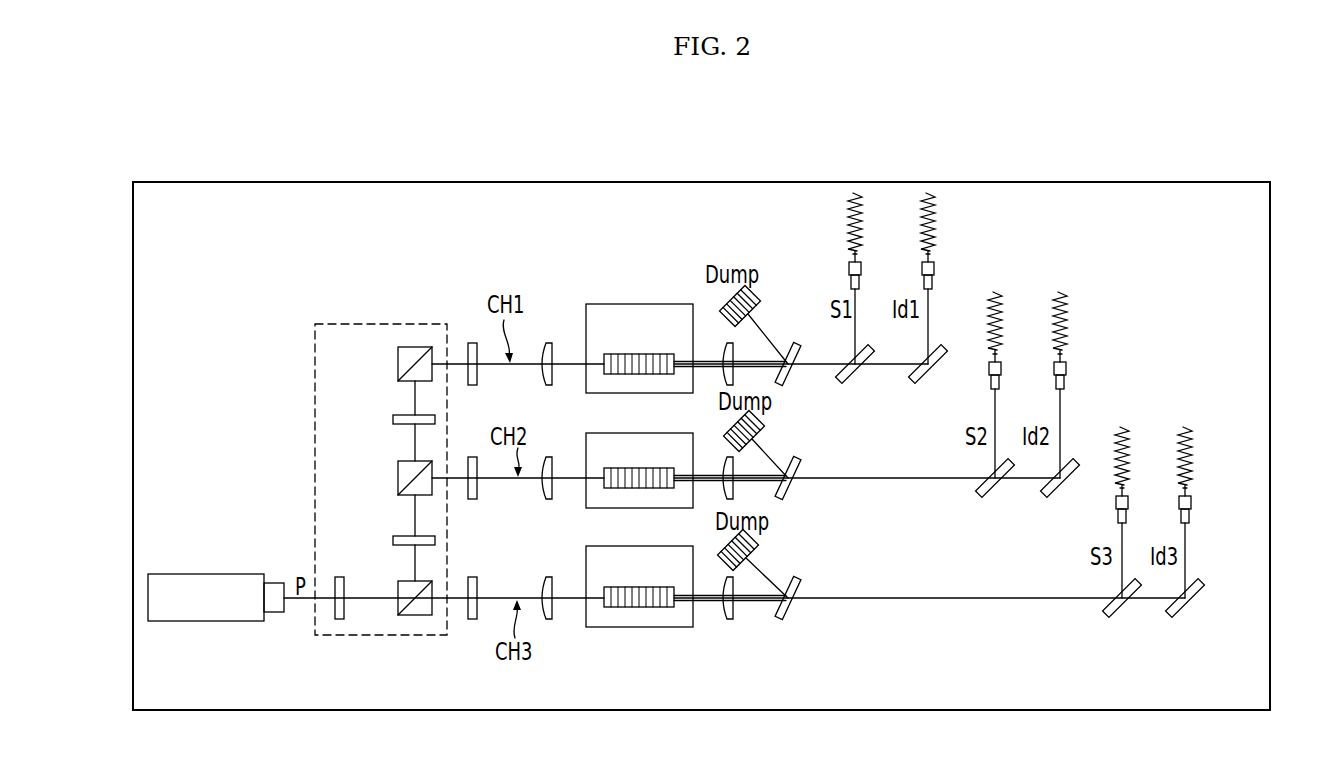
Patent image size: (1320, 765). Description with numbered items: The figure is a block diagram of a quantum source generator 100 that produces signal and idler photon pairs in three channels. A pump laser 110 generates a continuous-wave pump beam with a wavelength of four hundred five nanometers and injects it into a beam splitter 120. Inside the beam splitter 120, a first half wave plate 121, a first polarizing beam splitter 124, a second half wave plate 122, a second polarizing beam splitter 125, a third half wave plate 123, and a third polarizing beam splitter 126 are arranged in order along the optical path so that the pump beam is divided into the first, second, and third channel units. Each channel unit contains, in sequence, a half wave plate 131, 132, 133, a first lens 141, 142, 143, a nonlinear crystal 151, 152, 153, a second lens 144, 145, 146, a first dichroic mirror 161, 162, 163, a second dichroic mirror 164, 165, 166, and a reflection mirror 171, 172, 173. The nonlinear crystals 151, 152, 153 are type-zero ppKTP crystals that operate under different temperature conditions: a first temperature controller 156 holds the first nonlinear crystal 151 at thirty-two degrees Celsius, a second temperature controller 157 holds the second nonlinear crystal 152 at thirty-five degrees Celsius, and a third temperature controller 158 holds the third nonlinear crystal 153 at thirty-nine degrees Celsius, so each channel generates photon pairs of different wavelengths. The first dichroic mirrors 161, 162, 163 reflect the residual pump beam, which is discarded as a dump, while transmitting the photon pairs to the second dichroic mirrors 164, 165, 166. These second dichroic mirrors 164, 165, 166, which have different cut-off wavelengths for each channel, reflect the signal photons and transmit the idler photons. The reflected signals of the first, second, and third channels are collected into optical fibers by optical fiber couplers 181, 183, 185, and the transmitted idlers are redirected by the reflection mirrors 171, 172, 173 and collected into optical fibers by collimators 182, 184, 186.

The quantum source generator 100 is at (703, 181).
The pump laser 110 is at (200, 574).
The beam splitter 120 is at (369, 323).
The first half wave plate 121 is at (340, 577).
The second half wave plate 122 is at (435, 540).
The third half wave plate 123 is at (393, 420).
The first polarizing beam splitter 124 is at (418, 615).
The second polarizing beam splitter 125 is at (398, 478).
The third polarizing beam splitter 126 is at (398, 362).
The half wave plate 131 is at (470, 342).
The half wave plate 132 is at (472, 457).
The half wave plate 133 is at (472, 619).
The first lens 141 is at (548, 342).
The first lens 142 is at (550, 457).
The first lens 143 is at (548, 619).
The second lens 144 is at (726, 343).
The second lens 145 is at (727, 457).
The second lens 146 is at (729, 619).
The first nonlinear crystal 151 is at (630, 374).
The second nonlinear crystal 152 is at (628, 489).
The third nonlinear crystal 153 is at (630, 607).
The first temperature controller 156 is at (632, 304).
The second temperature controller 157 is at (586, 508).
The third temperature controller 158 is at (690, 627).
The first dichroic mirror 161 is at (796, 348).
The first dichroic mirror 162 is at (797, 495).
The first dichroic mirror 163 is at (785, 610).
The second dichroic mirror 164 is at (846, 385).
The second dichroic mirror 165 is at (985, 492).
The second dichroic mirror 166 is at (1114, 610).
The reflection mirror 171 is at (920, 386).
The reflection mirror 172 is at (1048, 492).
The reflection mirror 173 is at (1178, 610).
The optical fiber coupler 181 is at (849, 268).
The collimator 182 is at (934, 268).
The optical fiber coupler 183 is at (1001, 372).
The collimator 184 is at (1066, 368).
The optical fiber coupler 185 is at (1115, 505).
The collimator 186 is at (1191, 505).